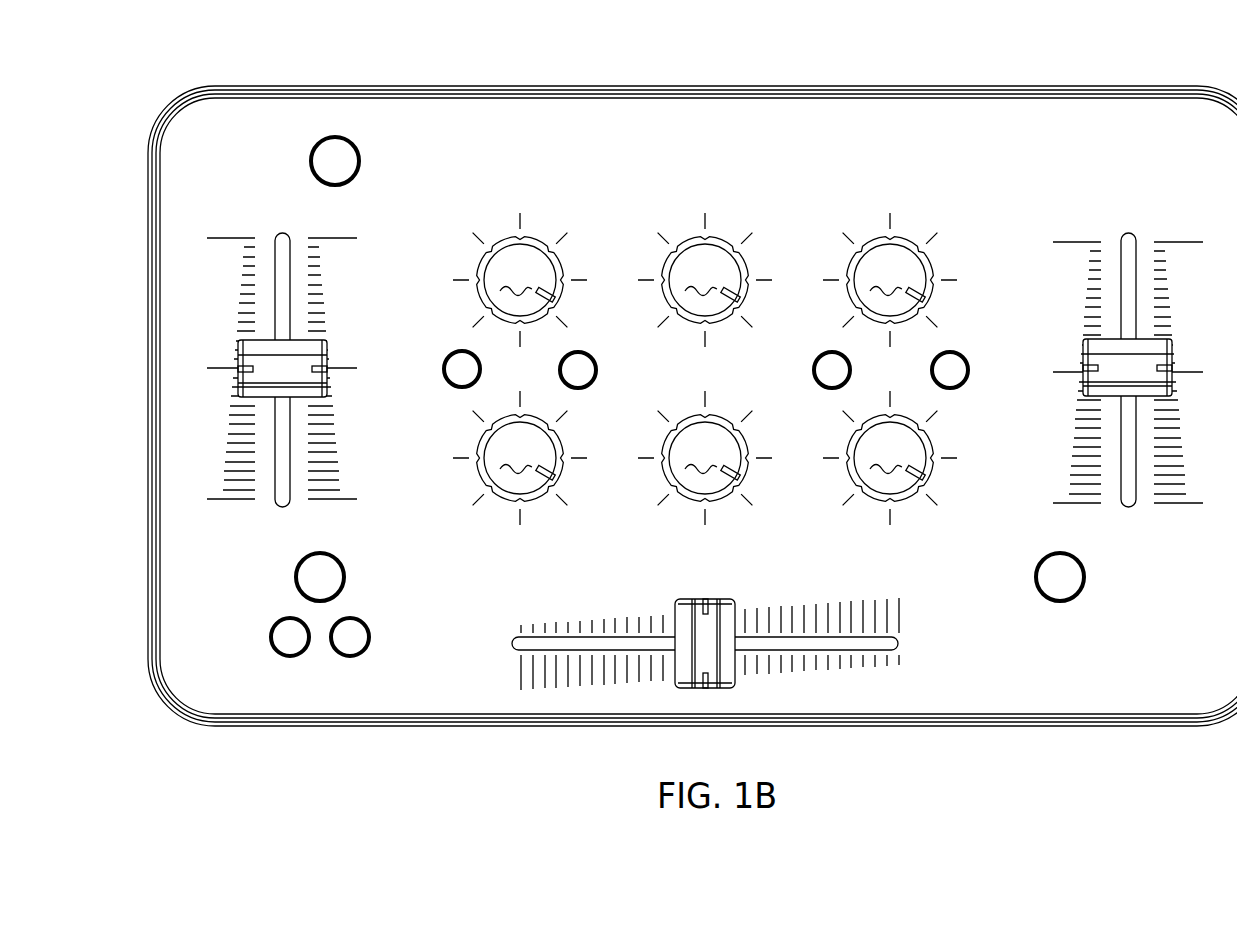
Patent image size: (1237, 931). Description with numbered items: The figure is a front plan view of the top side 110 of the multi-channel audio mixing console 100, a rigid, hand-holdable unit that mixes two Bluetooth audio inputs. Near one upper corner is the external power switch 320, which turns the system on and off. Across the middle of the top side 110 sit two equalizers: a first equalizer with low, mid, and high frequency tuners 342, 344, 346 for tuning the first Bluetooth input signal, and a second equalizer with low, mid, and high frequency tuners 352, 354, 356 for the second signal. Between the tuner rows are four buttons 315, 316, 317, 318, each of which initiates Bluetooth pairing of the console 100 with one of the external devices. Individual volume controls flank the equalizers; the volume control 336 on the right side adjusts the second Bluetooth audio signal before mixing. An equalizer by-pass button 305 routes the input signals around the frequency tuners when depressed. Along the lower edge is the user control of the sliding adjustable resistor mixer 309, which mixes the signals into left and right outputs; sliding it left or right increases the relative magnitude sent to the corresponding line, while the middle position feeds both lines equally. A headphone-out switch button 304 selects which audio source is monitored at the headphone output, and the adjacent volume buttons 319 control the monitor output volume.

The multi-channel audio mixing console 100 is at (610, 72).
The top side 110 is at (1041, 694).
The power switch 320 is at (322, 164).
The mid frequency tuner 344 is at (245, 349).
The volume control 336 is at (1092, 355).
The low frequency tuner 342 is at (520, 283).
The high frequency tuner 346 is at (890, 283).
The low frequency tuner 352 is at (520, 461).
The mid frequency tuner 354 is at (705, 461).
The high frequency tuner 356 is at (890, 461).
The button 315 is at (458, 366).
The button 316 is at (578, 366).
The button 317 is at (832, 366).
The button 318 is at (950, 366).
The headphone-out switch button 304 is at (323, 573).
The volume buttons 319 is at (292, 643).
The equalizer by-pass button 305 is at (1065, 584).
The sliding adjustable resistor mixer 309 is at (684, 612).